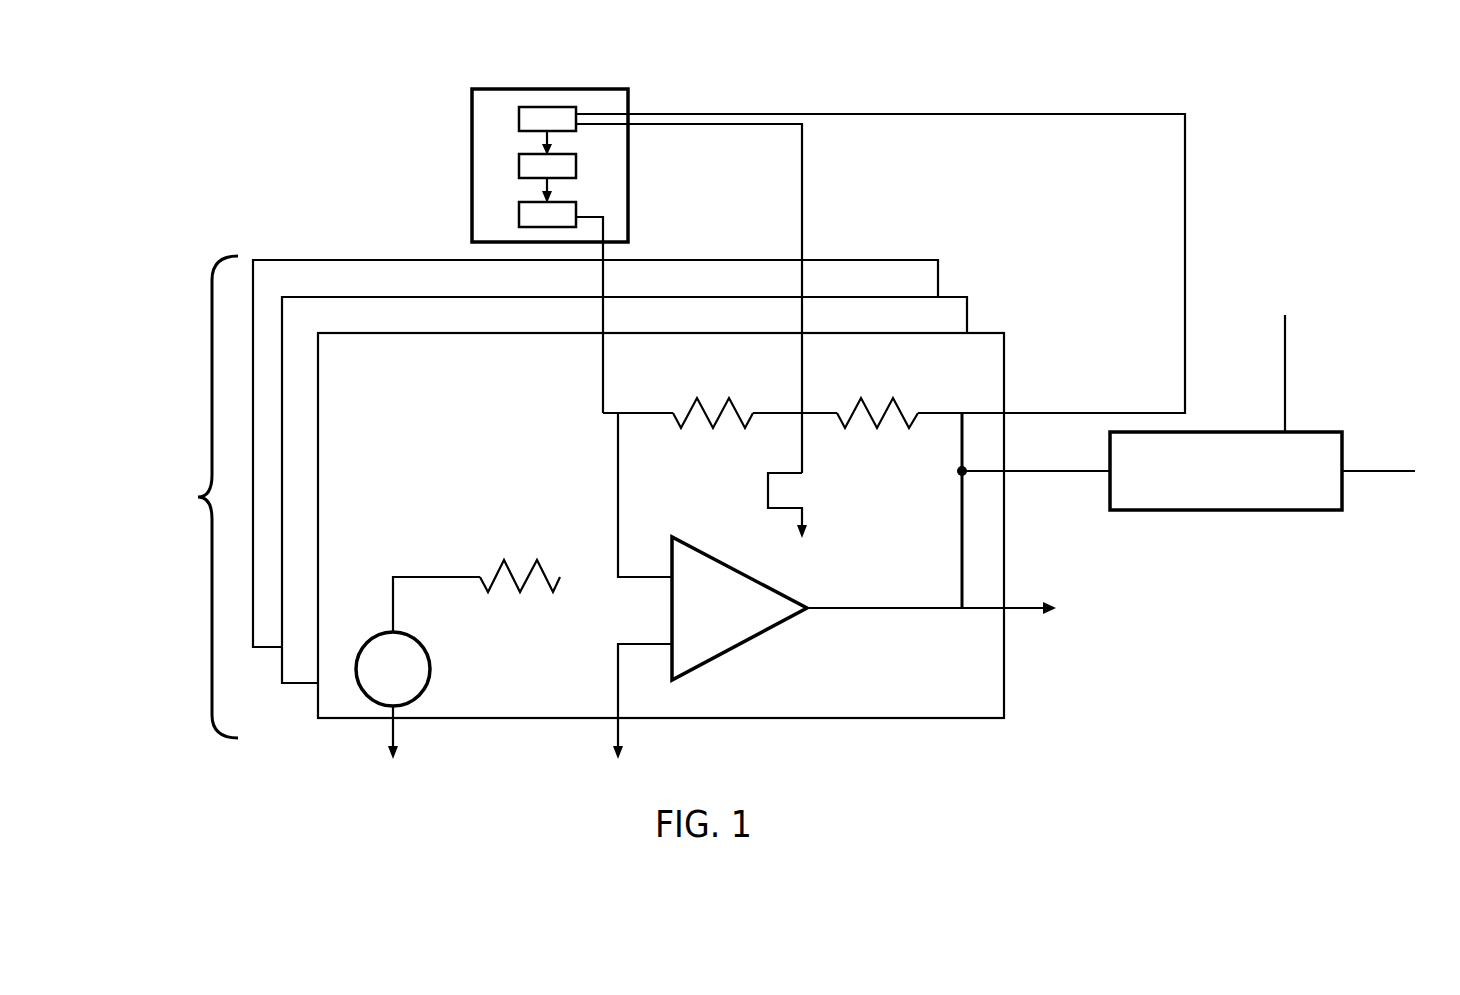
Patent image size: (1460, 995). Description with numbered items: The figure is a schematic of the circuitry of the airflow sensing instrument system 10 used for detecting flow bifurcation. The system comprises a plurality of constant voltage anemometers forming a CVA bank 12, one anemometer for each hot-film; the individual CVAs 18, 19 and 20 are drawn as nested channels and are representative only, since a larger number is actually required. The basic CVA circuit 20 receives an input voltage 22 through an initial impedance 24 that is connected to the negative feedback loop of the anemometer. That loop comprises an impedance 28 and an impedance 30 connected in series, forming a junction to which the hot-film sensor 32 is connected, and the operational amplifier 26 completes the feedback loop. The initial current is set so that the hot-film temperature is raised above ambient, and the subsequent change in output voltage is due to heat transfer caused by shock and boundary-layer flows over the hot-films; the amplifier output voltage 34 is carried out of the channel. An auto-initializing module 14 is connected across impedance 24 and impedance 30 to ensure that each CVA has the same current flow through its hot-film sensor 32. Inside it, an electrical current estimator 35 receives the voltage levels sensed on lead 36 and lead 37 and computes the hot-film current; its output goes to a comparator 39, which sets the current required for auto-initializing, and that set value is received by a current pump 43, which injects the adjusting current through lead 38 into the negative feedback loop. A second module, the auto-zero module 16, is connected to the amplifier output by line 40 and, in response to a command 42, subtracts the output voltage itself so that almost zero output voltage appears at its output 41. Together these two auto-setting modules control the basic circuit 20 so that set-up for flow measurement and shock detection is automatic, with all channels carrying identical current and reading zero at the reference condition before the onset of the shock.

The airflow sensing instrument system 10 is at (1040, 98).
The CVA bank 12 is at (198, 497).
The auto-initializing module 14 is at (537, 107).
The auto-zero module 16 is at (1210, 510).
The constant voltage anemometer 18 is at (938, 275).
The constant voltage anemometer 19 is at (967, 312).
The basic CVA circuit 20 is at (1004, 360).
The input voltage 22 is at (430, 669).
The initial impedance 24 is at (525, 585).
The operational amplifier 26 is at (720, 653).
The impedance 28 is at (708, 410).
The impedance 30 is at (873, 410).
The hot-film sensor 32 is at (770, 480).
The output voltage 34 is at (1052, 614).
The electrical current estimator 35 is at (519, 125).
The lead 36 is at (1185, 227).
The lead 37 is at (802, 207).
The lead 38 is at (603, 258).
The comparator 39 is at (519, 168).
The output line 40 is at (1055, 471).
The output 41 is at (1370, 471).
The command 42 is at (1285, 353).
The current pump 43 is at (519, 218).